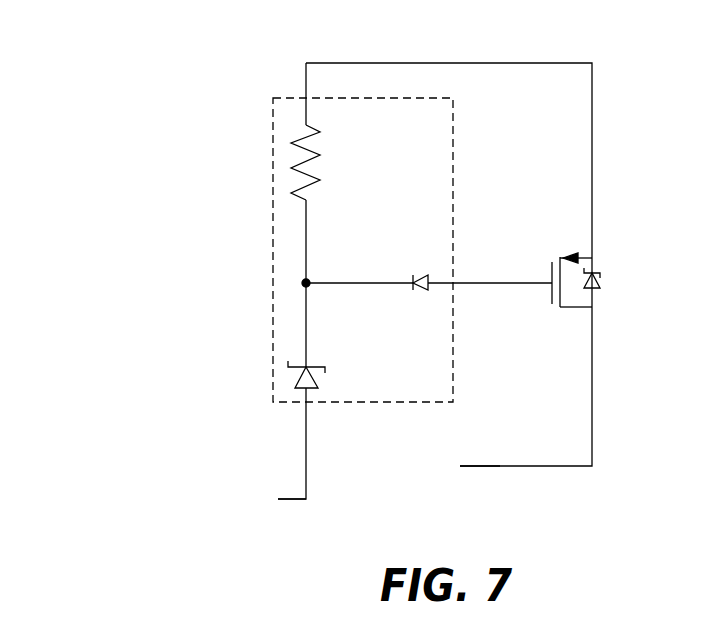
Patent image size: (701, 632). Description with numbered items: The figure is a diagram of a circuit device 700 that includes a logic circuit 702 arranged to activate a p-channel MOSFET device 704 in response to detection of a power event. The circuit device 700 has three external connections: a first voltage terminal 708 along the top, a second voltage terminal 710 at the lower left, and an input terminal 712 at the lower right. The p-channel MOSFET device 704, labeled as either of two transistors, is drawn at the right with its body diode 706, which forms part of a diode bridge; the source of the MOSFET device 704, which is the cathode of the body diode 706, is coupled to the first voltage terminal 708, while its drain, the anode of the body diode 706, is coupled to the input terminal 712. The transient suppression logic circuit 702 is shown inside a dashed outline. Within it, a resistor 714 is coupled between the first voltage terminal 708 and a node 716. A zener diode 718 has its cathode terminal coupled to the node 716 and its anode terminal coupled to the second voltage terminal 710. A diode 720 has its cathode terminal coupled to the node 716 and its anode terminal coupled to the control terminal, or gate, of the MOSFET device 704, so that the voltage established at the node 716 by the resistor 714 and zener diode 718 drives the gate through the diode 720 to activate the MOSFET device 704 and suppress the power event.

The circuit device 700 is at (190, 22).
The logic circuit 702 is at (273, 127).
The p-channel MOSFET device 704 is at (548, 228).
The body diode 706 is at (595, 278).
The first voltage terminal (Vpos) 708 is at (370, 62).
The second voltage terminal (Vneg) 710 is at (288, 500).
The input terminal (Vin) 712 is at (493, 465).
The resistor 714 is at (292, 193).
The node 716 is at (305, 282).
The zener diode 718 is at (297, 380).
The diode 720 is at (423, 278).